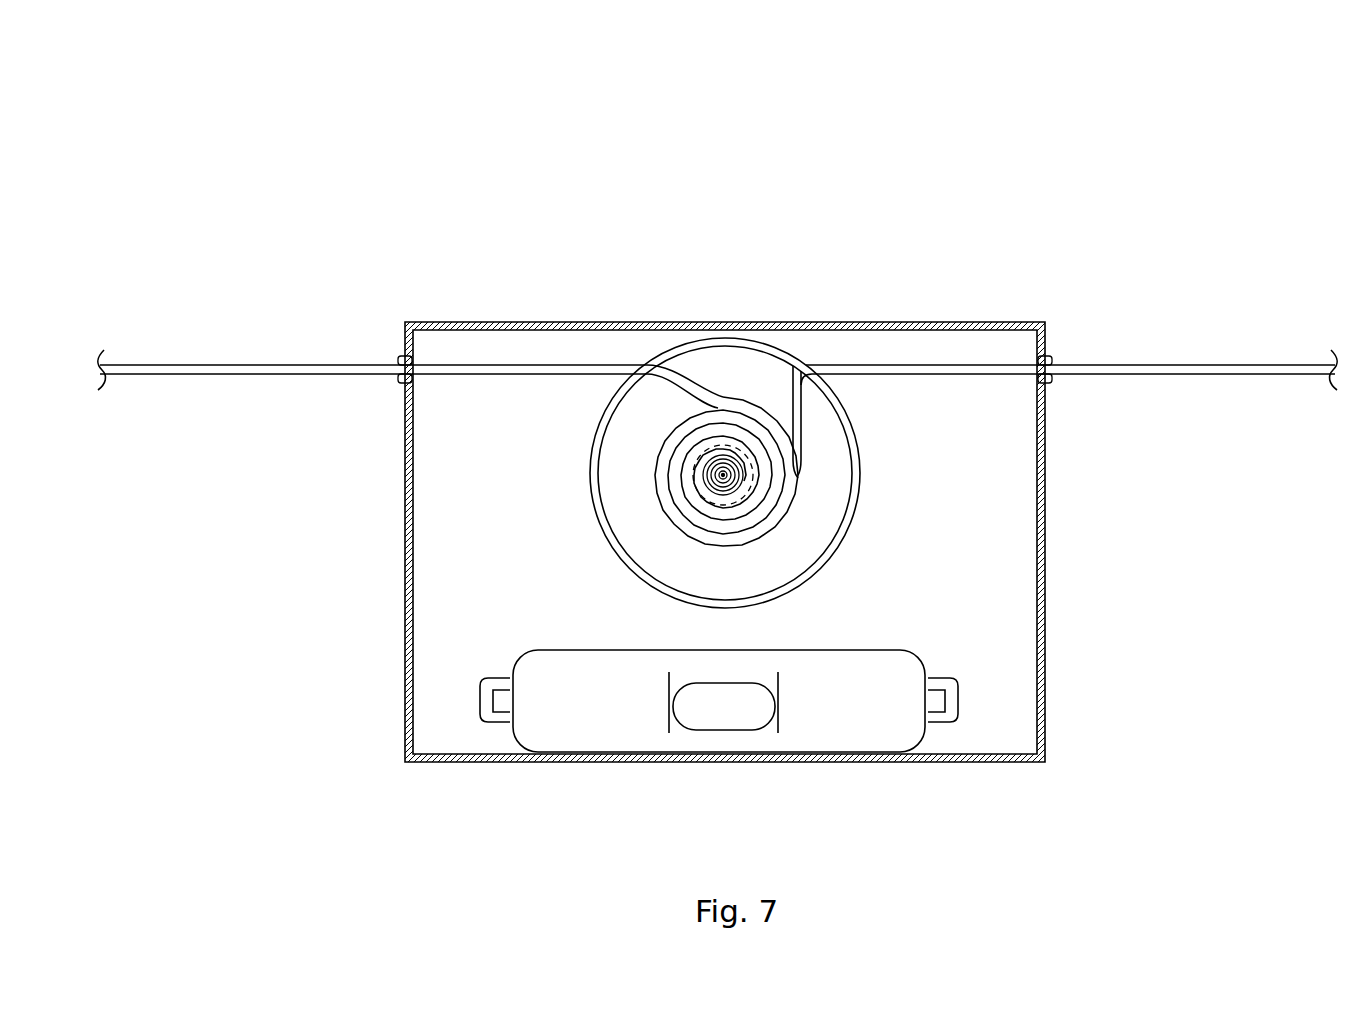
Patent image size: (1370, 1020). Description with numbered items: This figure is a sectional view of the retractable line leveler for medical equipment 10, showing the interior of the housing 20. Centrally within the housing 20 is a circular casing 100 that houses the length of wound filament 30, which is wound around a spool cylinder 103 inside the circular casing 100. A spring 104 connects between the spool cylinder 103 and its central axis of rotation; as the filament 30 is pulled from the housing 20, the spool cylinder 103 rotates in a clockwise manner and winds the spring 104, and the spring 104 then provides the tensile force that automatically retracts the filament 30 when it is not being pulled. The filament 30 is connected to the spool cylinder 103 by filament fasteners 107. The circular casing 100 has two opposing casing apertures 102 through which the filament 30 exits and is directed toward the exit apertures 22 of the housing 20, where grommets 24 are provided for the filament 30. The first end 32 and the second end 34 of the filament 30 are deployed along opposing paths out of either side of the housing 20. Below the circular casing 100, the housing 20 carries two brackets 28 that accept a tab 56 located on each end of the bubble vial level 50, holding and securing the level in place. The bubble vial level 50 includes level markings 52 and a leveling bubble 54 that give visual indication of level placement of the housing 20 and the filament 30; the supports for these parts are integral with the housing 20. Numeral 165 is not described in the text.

The retractable line leveler for medical equipment 10 is at (1240, 200).
The housing 20 is at (407, 678).
The exit apertures 22 is at (398, 362).
The grommets 24 is at (399, 356).
The brackets 28 is at (483, 720).
The filament 30 is at (177, 365).
The first end 32 is at (106, 448).
The second end 34 is at (1248, 452).
The bubble vial level 50 is at (588, 728).
The level markings 52 is at (669, 725).
The leveling bubble 54 is at (716, 712).
The tab 56 is at (497, 690).
The circular casing 100 is at (797, 353).
The casing apertures 102 is at (650, 363).
The spool cylinder 103 is at (690, 485).
The spring 104 is at (700, 474).
The filament fasteners 107 is at (722, 440).
The reel axis 165 is at (725, 473).